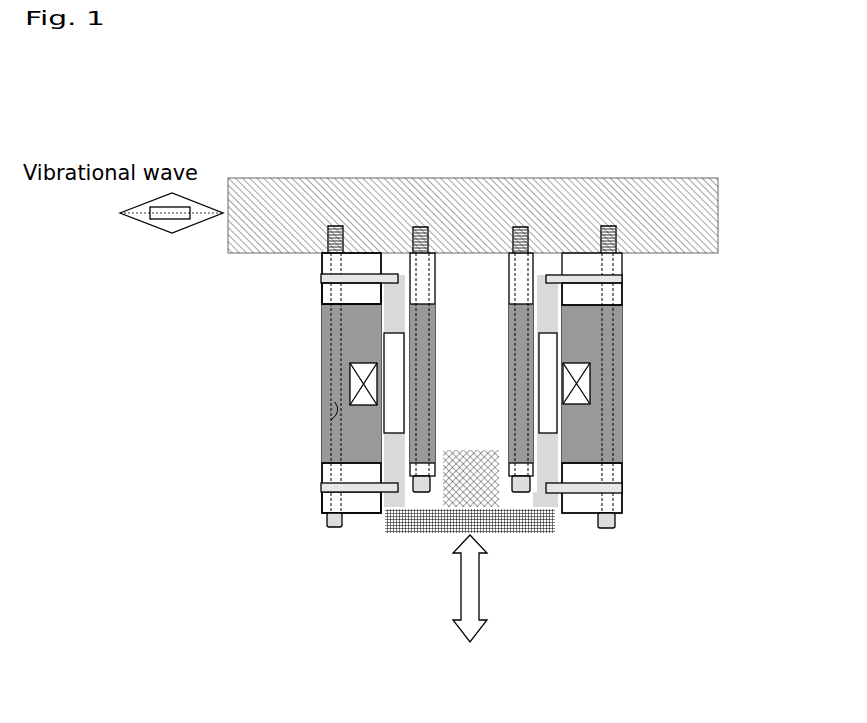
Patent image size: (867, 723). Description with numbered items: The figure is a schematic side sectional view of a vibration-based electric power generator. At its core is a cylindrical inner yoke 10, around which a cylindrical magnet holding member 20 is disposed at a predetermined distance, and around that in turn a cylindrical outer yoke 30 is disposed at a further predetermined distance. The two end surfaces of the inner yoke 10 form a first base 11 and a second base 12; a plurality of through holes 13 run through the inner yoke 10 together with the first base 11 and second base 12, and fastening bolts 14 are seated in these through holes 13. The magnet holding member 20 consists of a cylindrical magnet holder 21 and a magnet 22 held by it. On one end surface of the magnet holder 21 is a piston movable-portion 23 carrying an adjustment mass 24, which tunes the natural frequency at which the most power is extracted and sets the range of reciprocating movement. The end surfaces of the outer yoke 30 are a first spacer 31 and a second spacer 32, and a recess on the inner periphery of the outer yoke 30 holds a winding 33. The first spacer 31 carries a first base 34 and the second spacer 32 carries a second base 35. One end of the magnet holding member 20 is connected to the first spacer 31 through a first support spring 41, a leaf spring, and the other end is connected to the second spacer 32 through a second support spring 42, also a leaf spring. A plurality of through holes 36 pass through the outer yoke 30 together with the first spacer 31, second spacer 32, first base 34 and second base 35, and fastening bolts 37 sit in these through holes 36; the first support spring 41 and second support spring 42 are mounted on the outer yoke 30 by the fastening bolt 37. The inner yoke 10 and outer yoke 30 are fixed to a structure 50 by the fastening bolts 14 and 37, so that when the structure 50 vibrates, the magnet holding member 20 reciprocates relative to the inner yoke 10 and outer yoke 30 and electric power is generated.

The inner yoke 10 is at (444, 357).
The first base 11 is at (540, 269).
The second base 12 is at (562, 468).
The through holes 13 is at (518, 290).
The fastening bolts 14 is at (527, 483).
The magnet holding member 20 is at (413, 332).
The magnet holder 21 is at (552, 327).
The magnet 22 is at (552, 358).
The piston movable-portion 23 is at (493, 488).
The adjustment mass 24 is at (500, 510).
The outer yoke 30 is at (313, 346).
The first spacer 31 is at (322, 296).
The second spacer 32 is at (322, 468).
The winding 33 is at (362, 385).
The first base 34 is at (322, 265).
The second base 35 is at (322, 503).
The through holes 36 is at (331, 416).
The fastening bolts 37 is at (326, 518).
The first support spring 41 is at (322, 280).
The second support spring 42 is at (322, 487).
The structure 50 is at (704, 178).